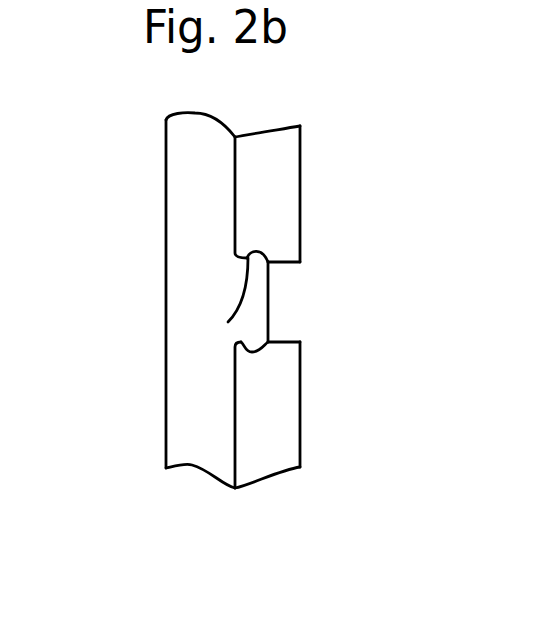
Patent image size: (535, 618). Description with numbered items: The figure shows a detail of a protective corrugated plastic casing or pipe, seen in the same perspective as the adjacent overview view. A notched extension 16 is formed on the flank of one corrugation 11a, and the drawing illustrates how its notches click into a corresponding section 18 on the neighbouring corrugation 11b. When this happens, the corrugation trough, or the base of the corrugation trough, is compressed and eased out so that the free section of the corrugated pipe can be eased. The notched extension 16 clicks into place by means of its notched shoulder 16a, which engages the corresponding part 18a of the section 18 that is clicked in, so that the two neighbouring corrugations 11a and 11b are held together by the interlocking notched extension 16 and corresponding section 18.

The first layer / first panel 11a is at (203, 437).
The neighbouring corrugation 11b is at (275, 450).
The notched extension 16 is at (268, 315).
The notched shoulder 16a is at (228, 321).
The corresponding section 18 is at (292, 290).
The corresponding part 18a is at (258, 250).